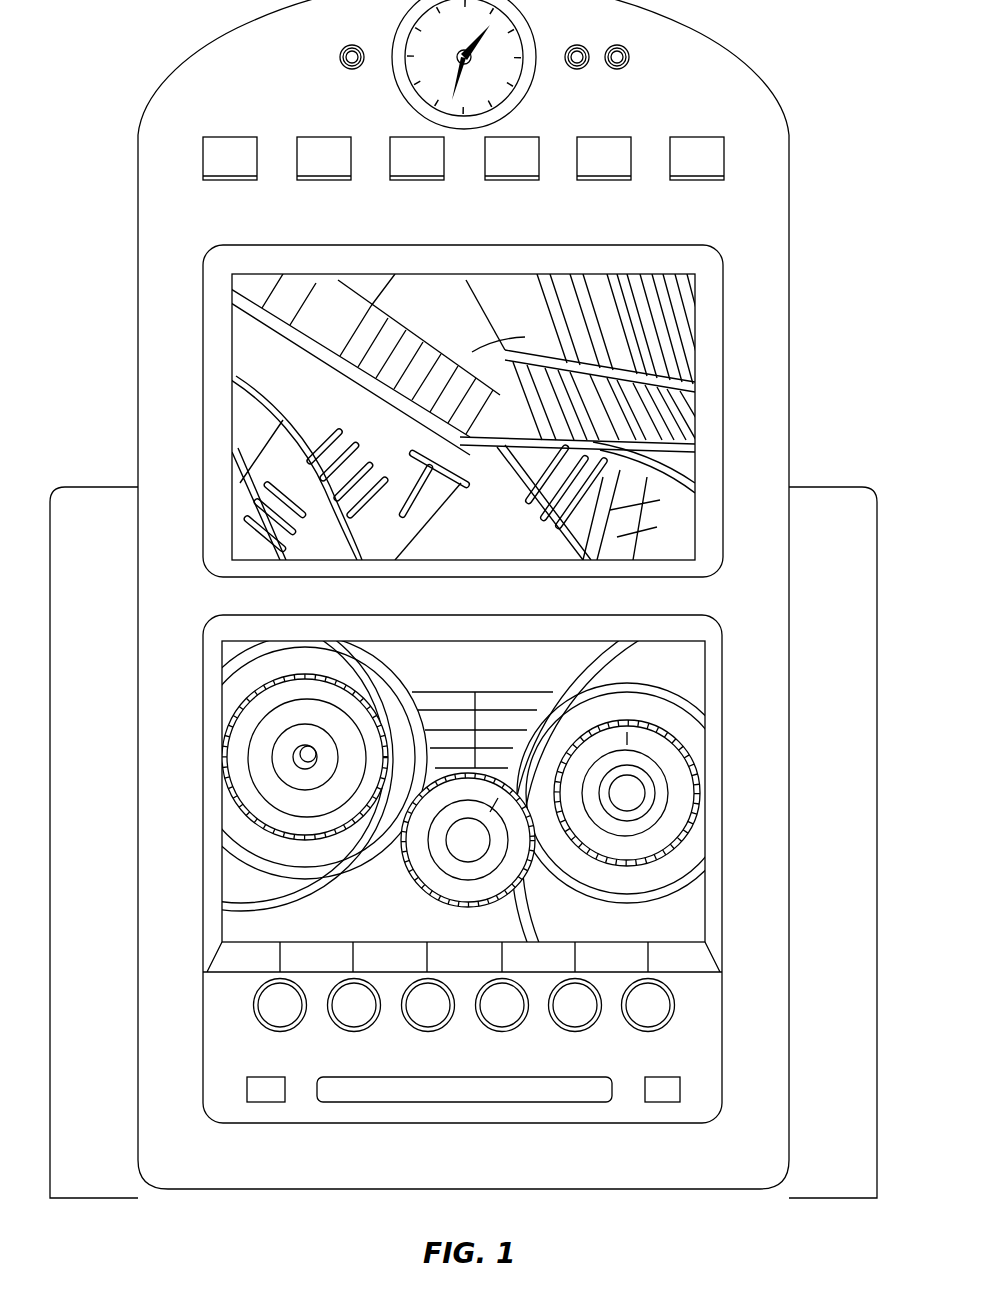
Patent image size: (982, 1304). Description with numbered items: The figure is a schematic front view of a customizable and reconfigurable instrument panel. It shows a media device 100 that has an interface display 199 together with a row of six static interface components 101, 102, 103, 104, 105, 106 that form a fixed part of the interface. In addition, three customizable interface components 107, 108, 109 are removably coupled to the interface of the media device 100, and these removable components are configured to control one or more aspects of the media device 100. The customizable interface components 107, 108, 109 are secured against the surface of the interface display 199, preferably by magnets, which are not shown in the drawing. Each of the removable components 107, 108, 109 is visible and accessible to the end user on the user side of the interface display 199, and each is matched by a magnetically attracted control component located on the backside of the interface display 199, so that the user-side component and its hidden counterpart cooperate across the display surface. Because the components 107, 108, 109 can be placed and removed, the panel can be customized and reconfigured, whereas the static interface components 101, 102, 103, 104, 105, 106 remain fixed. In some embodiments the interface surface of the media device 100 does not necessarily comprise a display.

The media device 100 is at (136, 282).
The interface display 199 is at (201, 791).
The static interface component 101 is at (274, 1032).
The static interface component 102 is at (348, 1032).
The static interface component 103 is at (422, 1032).
The static interface component 104 is at (496, 1032).
The static interface component 105 is at (569, 1032).
The static interface component 106 is at (642, 1032).
The customizable interface component 107 is at (313, 698).
The customizable interface component 108 is at (472, 882).
The customizable interface component 109 is at (650, 755).